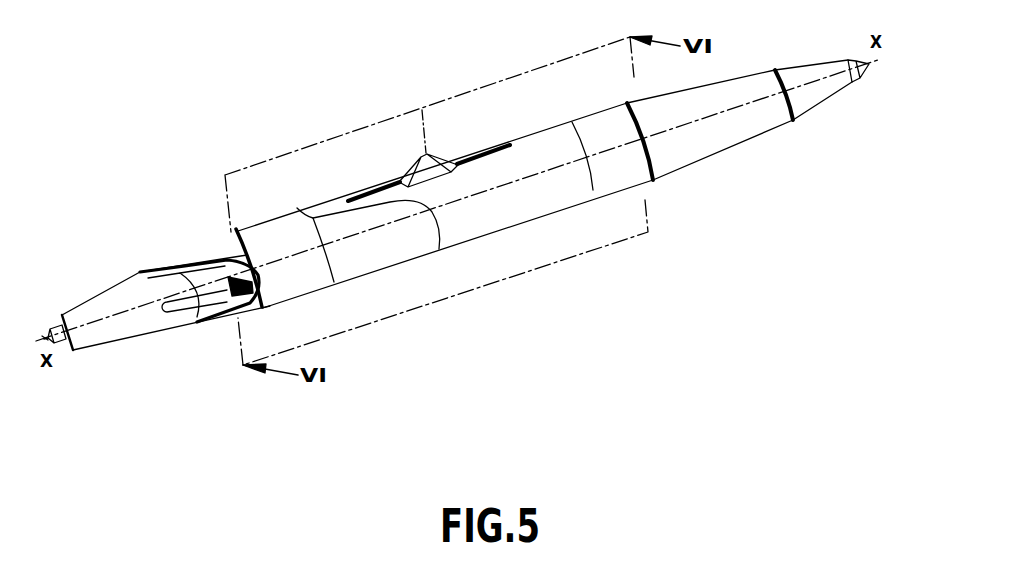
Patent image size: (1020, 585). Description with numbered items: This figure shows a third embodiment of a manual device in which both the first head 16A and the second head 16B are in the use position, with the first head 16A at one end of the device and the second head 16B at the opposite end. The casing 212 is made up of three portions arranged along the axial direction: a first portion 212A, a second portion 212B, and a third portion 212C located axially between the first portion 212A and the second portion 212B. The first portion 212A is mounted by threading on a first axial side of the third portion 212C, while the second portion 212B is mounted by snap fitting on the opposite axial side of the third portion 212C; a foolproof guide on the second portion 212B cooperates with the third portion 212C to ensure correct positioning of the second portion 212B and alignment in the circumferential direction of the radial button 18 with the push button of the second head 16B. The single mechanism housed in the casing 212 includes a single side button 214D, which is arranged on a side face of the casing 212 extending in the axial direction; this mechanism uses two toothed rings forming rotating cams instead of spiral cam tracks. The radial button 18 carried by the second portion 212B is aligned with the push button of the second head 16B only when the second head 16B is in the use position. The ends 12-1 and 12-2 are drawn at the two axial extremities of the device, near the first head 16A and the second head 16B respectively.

The casing 212 is at (783, 275).
The first portion 212A is at (721, 153).
The second portion 212B is at (164, 331).
The third portion 212C is at (473, 233).
The single side button 214D is at (408, 178).
The first head 16A is at (857, 60).
The second head 16B is at (61, 326).
The first end 12-1 is at (853, 82).
The second end 12-2 is at (66, 349).
The radial button 18 is at (227, 287).